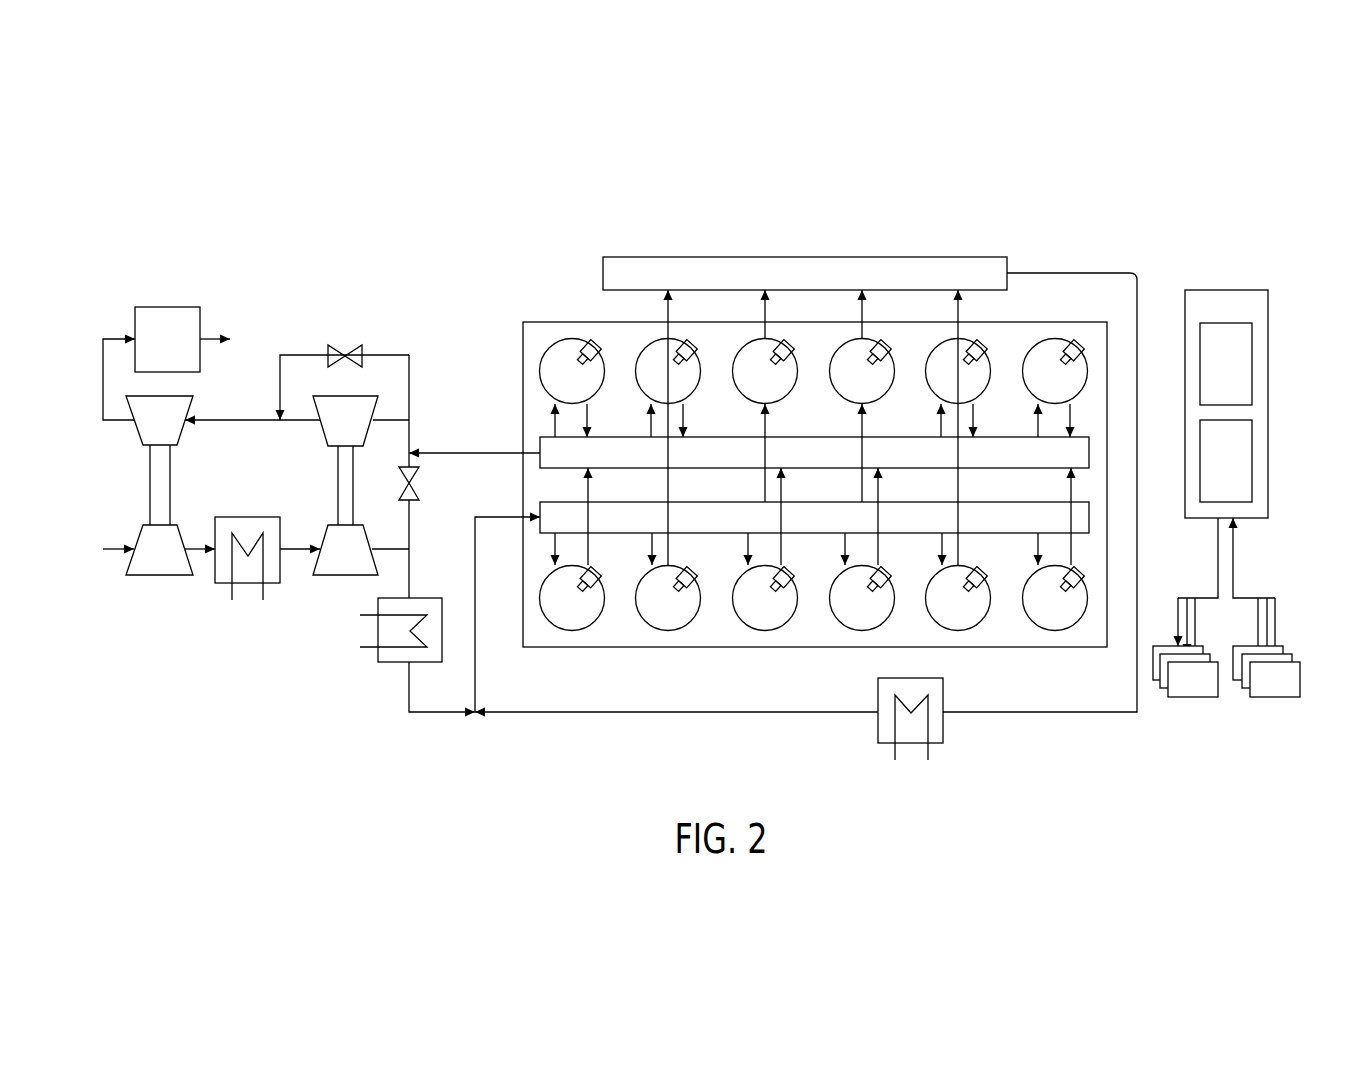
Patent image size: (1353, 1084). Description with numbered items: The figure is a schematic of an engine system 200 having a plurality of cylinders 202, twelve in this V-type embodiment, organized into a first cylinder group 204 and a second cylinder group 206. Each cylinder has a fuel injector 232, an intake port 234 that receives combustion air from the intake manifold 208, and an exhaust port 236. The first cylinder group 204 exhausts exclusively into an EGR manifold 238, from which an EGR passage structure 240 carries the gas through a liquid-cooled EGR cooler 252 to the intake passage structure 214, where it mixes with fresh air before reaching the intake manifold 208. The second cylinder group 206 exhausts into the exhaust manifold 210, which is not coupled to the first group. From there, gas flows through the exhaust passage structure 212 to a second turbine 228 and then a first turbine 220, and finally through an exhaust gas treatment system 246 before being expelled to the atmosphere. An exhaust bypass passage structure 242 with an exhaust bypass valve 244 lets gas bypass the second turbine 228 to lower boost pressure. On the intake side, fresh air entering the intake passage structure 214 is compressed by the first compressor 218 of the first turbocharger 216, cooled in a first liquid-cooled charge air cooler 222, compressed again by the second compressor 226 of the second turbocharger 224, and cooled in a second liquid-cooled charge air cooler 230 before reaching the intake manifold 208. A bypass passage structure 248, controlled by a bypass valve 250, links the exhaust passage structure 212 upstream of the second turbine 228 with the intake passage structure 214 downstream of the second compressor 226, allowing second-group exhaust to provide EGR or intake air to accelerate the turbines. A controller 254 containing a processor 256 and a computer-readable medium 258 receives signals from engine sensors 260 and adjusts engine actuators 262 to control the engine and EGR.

The engine system 200 is at (1263, 157).
The plurality of cylinders 202 is at (520, 286).
The first cylinder group 204 is at (814, 396).
The second cylinder group 206 is at (814, 469).
The intake manifold 208 is at (798, 529).
The exhaust manifold 210 is at (798, 464).
The exhaust passage structure 212 is at (213, 337).
The intake passage structure 214 is at (103, 550).
The first turbocharger 216 is at (128, 485).
The first compressor 218 is at (145, 561).
The first turbine 220 is at (145, 432).
The first liquid-cooled charge air cooler 222 is at (251, 517).
The second turbocharger 224 is at (309, 485).
The second compressor 226 is at (331, 561).
The second turbine 228 is at (331, 432).
The second liquid-cooled charge air cooler 230 is at (430, 598).
The fuel injector 232 is at (798, 344).
The intake port 234 is at (748, 556).
The exhaust port 236 is at (782, 552).
The EGR manifold 238 is at (790, 285).
The EGR passage structure 240 is at (1137, 272).
The exhaust bypass passage structure 242 is at (410, 354).
The exhaust bypass valve 244 is at (340, 345).
The exhaust gas treatment system 246 is at (152, 351).
The bypass passage structure 248 is at (411, 527).
The bypass valve 250 is at (416, 478).
The liquid-cooled EGR cooler 252 is at (945, 681).
The controller 254 is at (1212, 317).
The processor 256 is at (1211, 376).
The computer-readable medium 258 is at (1211, 473).
The engine sensors 260 is at (1265, 607).
The engine actuators 262 is at (1185, 607).